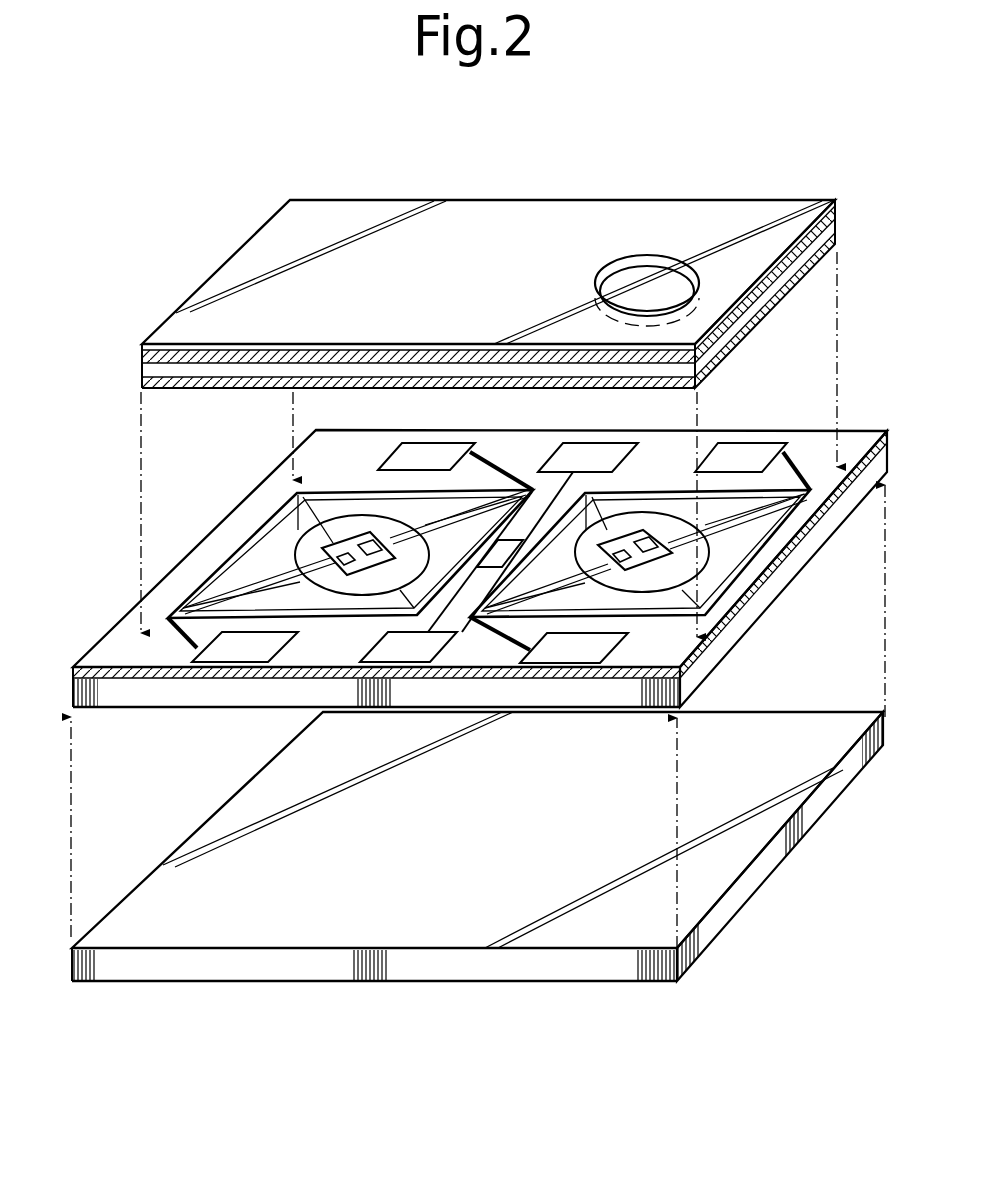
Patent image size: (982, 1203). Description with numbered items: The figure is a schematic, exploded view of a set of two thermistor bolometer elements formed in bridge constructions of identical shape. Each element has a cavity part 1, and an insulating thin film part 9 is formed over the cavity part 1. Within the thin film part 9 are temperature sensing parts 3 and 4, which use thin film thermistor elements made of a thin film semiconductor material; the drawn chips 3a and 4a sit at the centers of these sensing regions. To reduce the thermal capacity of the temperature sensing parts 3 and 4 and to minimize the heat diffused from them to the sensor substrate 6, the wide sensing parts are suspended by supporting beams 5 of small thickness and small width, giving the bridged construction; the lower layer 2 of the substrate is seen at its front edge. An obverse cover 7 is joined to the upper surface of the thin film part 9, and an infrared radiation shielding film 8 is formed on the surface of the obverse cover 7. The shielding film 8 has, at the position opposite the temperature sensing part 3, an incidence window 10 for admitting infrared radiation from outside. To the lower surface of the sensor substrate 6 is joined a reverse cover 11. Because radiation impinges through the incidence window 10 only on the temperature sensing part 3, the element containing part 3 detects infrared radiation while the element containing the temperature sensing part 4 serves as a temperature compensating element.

The cavity part 1 is at (750, 543).
The lower layer of substrate 2 is at (73, 667).
The temperature sensing part 3 is at (757, 540).
The semiconductor chip in right recess 3a is at (630, 548).
The temperature sensing part 4 is at (300, 518).
The semiconductor chip in left recess 4a is at (366, 545).
The supporting beams 5 is at (232, 583).
The sensor substrate 6 is at (890, 460).
The obverse cover 7 is at (243, 264).
The infrared radiation shielding film 8 is at (783, 206).
The insulating thin film part 9 is at (640, 580).
The incidence window 10 is at (646, 282).
The reverse cover 11 is at (787, 858).